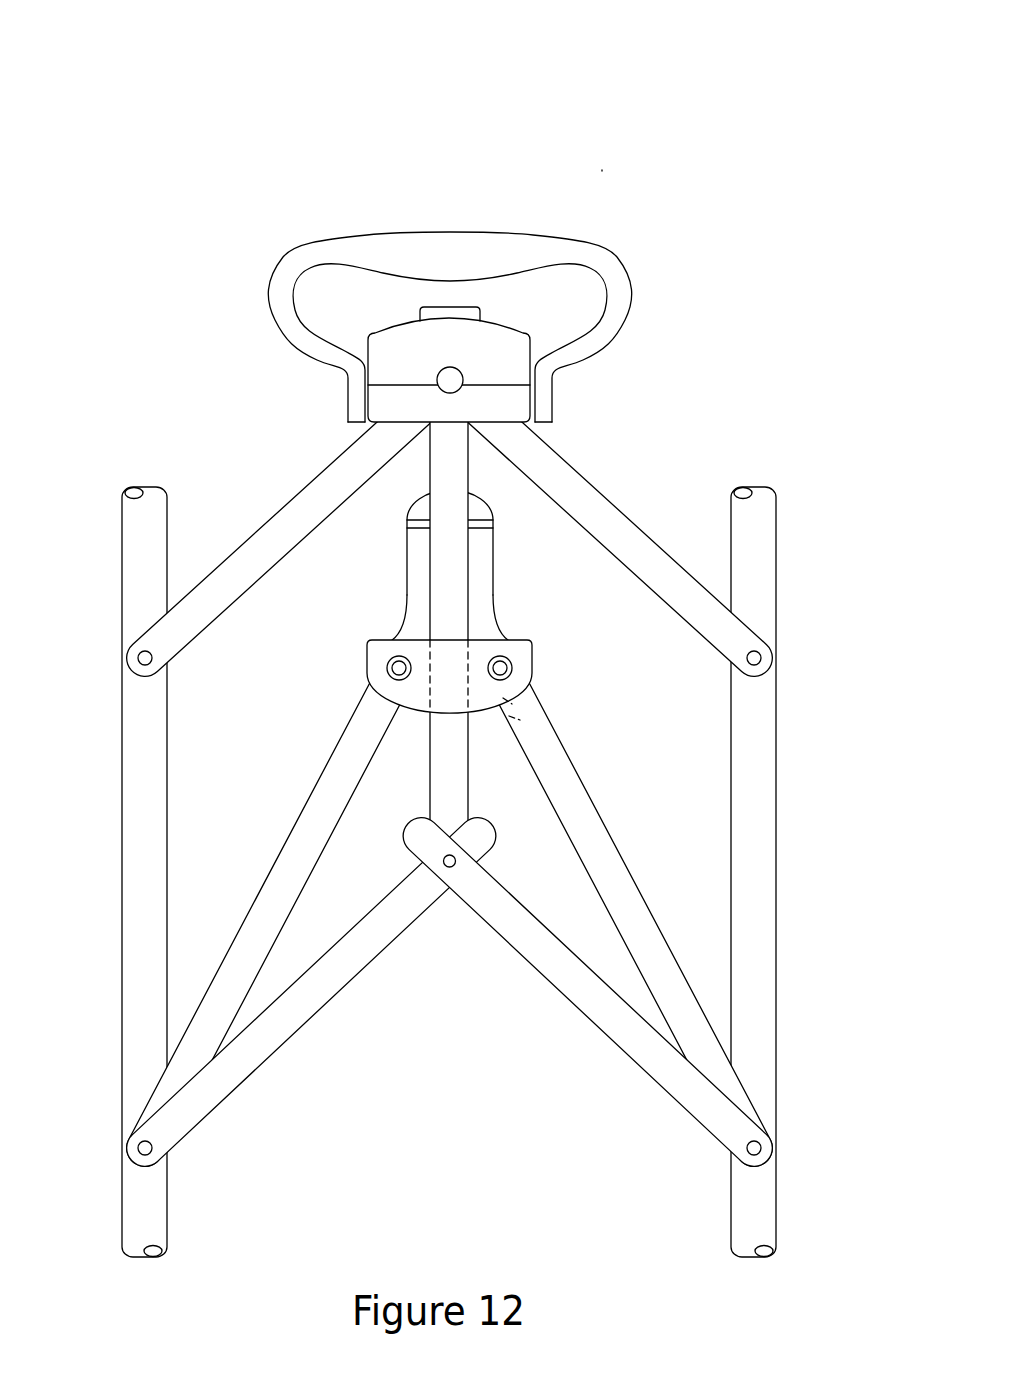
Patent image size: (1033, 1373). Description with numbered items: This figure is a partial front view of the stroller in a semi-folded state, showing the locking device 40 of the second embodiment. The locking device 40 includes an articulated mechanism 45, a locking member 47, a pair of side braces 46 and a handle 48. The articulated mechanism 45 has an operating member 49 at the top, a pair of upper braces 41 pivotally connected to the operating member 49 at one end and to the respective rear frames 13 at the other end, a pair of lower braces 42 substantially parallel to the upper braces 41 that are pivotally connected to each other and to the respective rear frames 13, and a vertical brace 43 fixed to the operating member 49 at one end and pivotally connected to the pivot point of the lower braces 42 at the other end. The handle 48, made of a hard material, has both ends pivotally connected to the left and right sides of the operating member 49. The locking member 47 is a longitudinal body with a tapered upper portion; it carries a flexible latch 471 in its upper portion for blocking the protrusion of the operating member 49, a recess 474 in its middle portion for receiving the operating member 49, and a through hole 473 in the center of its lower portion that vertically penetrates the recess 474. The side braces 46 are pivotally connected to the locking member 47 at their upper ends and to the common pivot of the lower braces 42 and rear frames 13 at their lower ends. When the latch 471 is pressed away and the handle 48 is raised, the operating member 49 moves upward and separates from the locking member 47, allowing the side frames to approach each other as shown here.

The rear frame 13 is at (145, 736).
The locking device 40 is at (602, 170).
The upper braces 41 is at (228, 575).
The lower braces 42 is at (350, 963).
The vertical brace 43 is at (443, 772).
The articulated mechanism 45 is at (662, 1092).
The side braces 46 is at (303, 866).
The locking member 47 is at (537, 652).
The flexible latch 471 is at (497, 527).
The through hole 473 is at (528, 720).
The recess 474 is at (417, 596).
The handle 48 is at (610, 268).
The operating member 49 is at (505, 318).